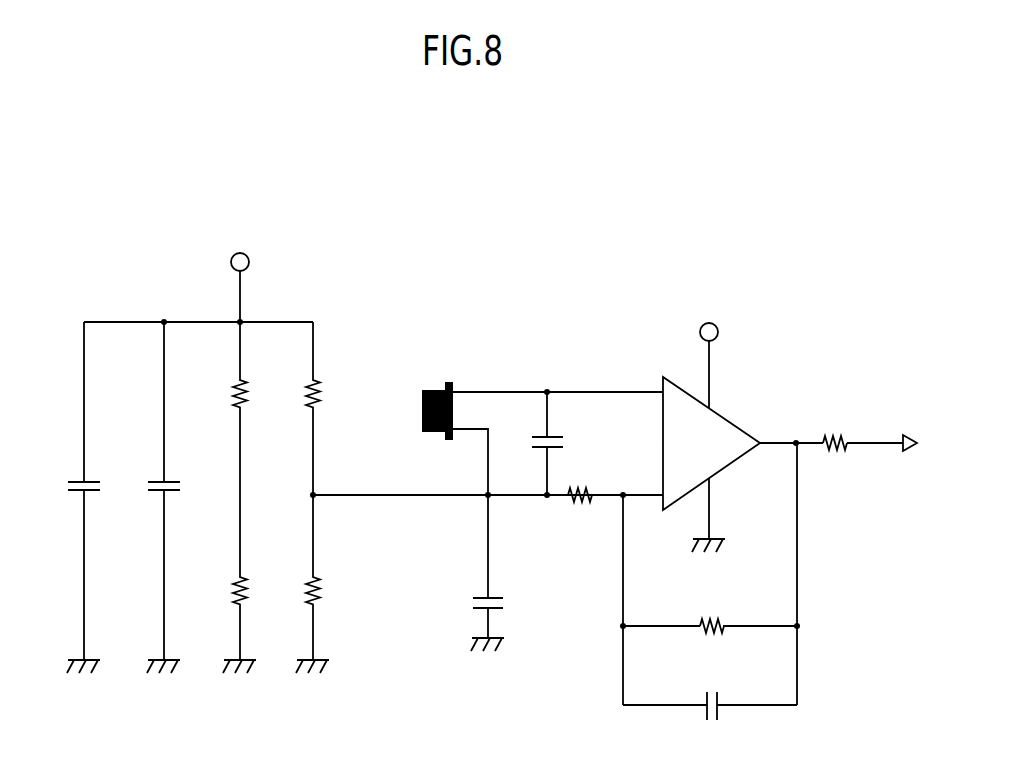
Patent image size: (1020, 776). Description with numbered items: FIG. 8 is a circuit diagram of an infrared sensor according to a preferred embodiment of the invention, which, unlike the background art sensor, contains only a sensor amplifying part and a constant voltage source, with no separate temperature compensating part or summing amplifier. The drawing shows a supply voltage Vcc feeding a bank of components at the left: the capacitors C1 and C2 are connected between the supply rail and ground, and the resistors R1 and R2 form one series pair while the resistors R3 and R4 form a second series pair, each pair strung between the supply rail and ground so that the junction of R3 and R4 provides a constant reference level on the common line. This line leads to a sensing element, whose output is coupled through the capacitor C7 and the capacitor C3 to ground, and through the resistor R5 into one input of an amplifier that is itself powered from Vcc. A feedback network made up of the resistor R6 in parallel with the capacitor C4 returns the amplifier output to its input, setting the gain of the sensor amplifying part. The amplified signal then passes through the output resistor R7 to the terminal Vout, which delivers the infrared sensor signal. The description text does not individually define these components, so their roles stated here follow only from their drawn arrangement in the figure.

The capacitor C1 is at (71, 497).
The capacitor C2 is at (147, 497).
The capacitor C3 is at (473, 573).
The capacitor C4 is at (712, 692).
The capacitor C7 is at (532, 443).
The resistor R1 is at (218, 407).
The resistor R2 is at (224, 582).
The resistor R3 is at (299, 408).
The resistor R4 is at (303, 584).
The resistor R5 is at (581, 476).
The resistor R6 is at (712, 609).
The resistor R7 is at (834, 425).
The supply voltage Vcc is at (472, 313).
The output voltage Vout is at (905, 427).